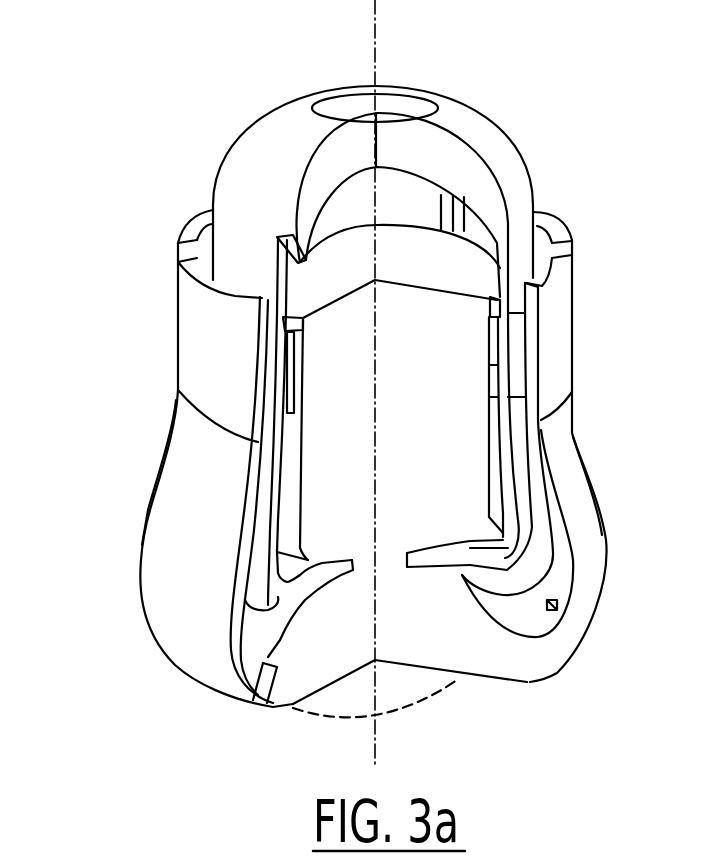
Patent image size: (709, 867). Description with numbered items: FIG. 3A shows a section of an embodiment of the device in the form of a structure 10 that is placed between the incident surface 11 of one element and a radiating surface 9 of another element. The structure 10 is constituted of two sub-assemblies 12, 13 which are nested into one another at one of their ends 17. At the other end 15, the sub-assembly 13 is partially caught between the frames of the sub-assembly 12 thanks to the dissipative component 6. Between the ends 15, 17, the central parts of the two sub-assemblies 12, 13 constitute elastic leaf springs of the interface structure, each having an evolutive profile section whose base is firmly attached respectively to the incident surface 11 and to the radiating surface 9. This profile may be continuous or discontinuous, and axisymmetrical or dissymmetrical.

The structure 10 is at (178, 132).
The incident surface 11 is at (362, 100).
The sub-assembly 13 is at (507, 163).
The end 15 is at (580, 340).
The dissipative component 6 is at (496, 367).
The end 17 is at (480, 546).
The sub-assembly 12 is at (523, 660).
The radiating surface 9 is at (352, 698).